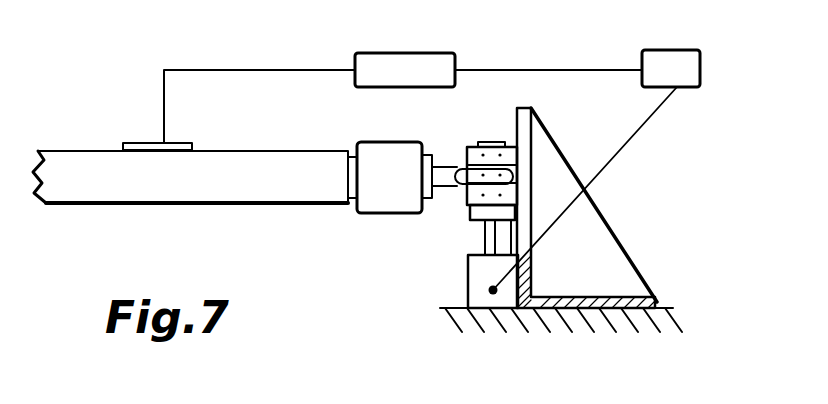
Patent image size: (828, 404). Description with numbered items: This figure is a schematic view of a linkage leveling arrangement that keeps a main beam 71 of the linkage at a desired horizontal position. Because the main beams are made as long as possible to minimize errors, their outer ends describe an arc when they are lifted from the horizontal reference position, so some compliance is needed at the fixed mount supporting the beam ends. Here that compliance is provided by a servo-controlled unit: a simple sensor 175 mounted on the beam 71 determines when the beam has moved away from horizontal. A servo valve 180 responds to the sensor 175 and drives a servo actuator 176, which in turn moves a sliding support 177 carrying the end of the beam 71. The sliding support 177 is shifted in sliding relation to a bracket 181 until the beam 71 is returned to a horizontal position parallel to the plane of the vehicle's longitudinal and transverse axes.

The main beam 71 is at (295, 193).
The sensor 175 is at (183, 140).
The servo actuator 176 is at (468, 273).
The sliding support 177 is at (463, 142).
The servo valve 180 is at (662, 50).
The bracket 181 is at (597, 232).